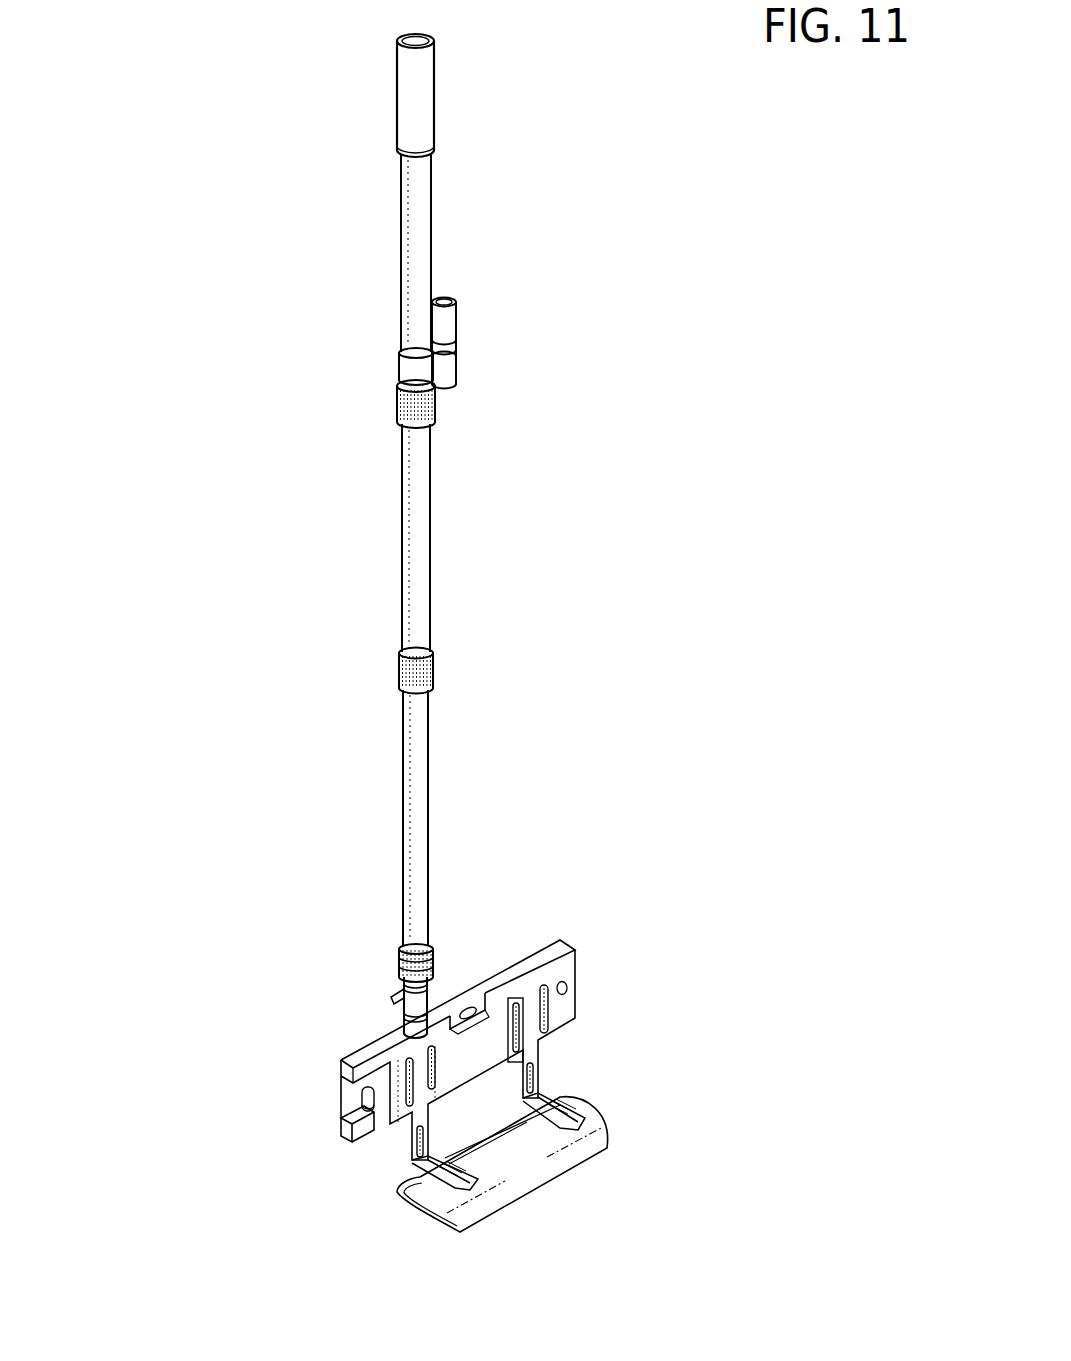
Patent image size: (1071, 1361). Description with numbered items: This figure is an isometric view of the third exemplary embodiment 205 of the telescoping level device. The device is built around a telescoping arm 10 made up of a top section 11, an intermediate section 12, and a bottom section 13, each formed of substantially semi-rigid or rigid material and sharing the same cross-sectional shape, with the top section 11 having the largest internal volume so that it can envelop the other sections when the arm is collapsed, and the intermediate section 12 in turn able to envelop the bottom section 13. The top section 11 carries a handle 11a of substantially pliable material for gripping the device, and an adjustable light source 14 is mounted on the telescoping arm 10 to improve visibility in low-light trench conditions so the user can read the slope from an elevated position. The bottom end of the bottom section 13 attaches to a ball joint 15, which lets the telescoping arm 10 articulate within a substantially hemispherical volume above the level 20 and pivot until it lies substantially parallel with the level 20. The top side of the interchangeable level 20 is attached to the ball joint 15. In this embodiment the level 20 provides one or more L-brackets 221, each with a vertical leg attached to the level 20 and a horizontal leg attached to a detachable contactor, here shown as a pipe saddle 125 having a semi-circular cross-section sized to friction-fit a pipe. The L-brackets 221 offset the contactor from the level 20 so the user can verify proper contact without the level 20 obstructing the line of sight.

The third exemplary embodiment 205 is at (213, 44).
The telescoping arm 10 is at (443, 947).
The handle 11a is at (417, 118).
The top section 11 is at (413, 258).
The adjustable light source 14 is at (447, 368).
The intermediate section 12 is at (413, 556).
The bottom section 13 is at (413, 807).
The ball joint 15 is at (432, 993).
The level 20 is at (341, 1078).
The L-brackets 221 is at (420, 1102).
The pipe saddle 125 is at (523, 1182).